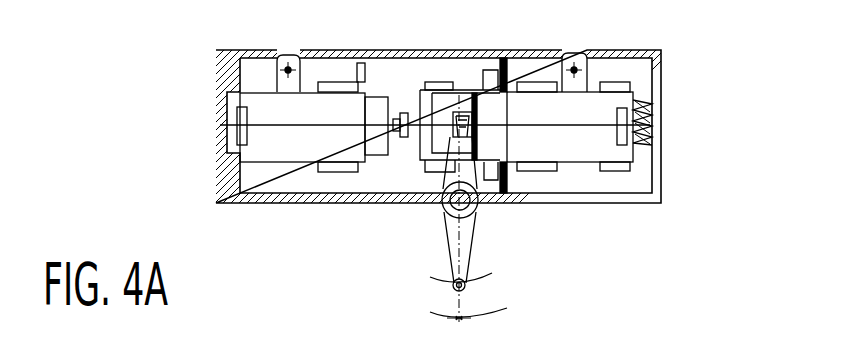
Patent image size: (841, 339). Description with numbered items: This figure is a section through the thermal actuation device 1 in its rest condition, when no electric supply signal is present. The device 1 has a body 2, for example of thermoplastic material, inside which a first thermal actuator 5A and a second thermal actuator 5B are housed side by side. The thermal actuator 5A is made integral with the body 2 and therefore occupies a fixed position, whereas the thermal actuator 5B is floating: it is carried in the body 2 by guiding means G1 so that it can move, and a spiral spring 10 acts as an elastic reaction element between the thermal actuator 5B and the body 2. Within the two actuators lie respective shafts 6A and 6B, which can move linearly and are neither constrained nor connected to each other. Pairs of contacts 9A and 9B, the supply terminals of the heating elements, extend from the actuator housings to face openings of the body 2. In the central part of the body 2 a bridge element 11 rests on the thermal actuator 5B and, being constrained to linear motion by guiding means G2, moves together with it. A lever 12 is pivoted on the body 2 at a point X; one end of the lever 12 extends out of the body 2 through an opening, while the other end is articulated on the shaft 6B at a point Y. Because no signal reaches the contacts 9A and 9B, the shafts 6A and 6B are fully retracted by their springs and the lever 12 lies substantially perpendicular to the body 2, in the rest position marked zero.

The device 1 is at (689, 131).
The body 2 is at (661, 53).
The first thermal actuator 5A is at (257, 167).
The second thermal actuator 5B is at (577, 165).
The shaft 6A is at (397, 157).
The shaft 6B is at (480, 70).
The contacts 9A is at (287, 55).
The contacts 9B is at (579, 53).
The spiral spring 10 is at (646, 102).
The bridge element 11 is at (440, 82).
The lever 12 is at (456, 250).
The guiding means G1 is at (535, 82).
The guiding means G2 is at (461, 112).
The pivot point X is at (477, 212).
The pivot point Y is at (453, 120).